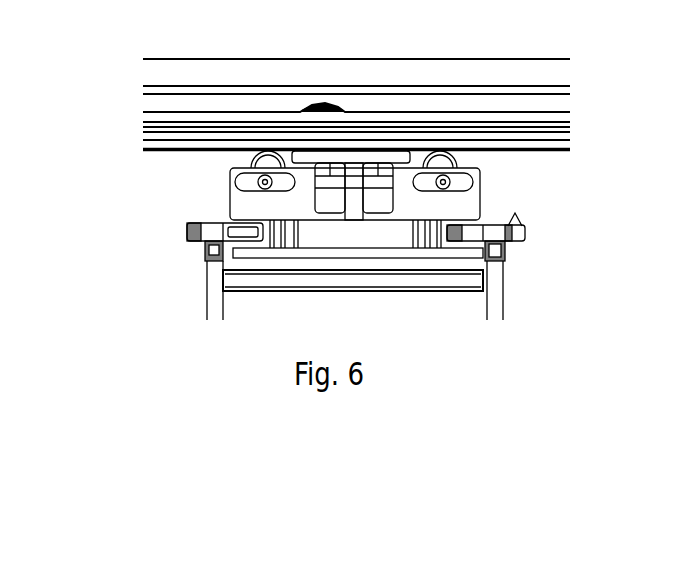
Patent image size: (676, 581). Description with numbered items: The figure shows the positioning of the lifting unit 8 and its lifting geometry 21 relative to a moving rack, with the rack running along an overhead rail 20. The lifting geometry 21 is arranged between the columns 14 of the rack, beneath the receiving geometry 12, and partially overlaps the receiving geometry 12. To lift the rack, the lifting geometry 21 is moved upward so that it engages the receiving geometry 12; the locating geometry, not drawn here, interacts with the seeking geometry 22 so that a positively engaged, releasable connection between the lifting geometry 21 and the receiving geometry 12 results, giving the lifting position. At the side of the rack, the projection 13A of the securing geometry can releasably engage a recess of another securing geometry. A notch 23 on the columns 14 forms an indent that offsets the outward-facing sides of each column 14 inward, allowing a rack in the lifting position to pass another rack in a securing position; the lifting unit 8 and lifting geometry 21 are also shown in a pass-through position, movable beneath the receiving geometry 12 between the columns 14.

The rail 20 is at (542, 120).
The lifting unit 8 is at (503, 190).
The receiving geometry 12 is at (462, 230).
The projection 13A is at (193, 232).
The seeking geometry 22 is at (240, 250).
The notch 23 is at (506, 249).
The lifting geometry 21 is at (367, 250).
The columns 14 is at (495, 288).